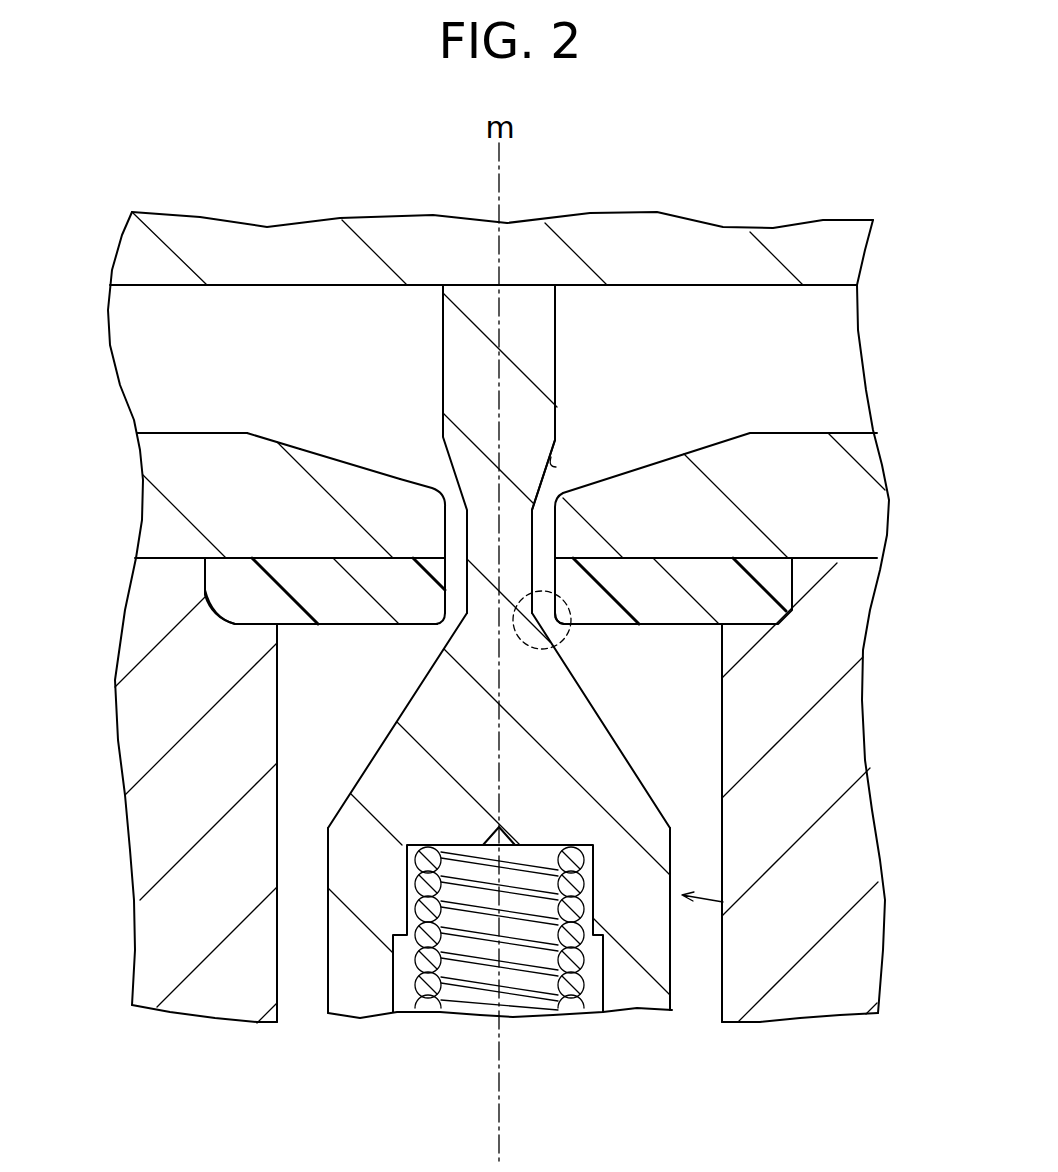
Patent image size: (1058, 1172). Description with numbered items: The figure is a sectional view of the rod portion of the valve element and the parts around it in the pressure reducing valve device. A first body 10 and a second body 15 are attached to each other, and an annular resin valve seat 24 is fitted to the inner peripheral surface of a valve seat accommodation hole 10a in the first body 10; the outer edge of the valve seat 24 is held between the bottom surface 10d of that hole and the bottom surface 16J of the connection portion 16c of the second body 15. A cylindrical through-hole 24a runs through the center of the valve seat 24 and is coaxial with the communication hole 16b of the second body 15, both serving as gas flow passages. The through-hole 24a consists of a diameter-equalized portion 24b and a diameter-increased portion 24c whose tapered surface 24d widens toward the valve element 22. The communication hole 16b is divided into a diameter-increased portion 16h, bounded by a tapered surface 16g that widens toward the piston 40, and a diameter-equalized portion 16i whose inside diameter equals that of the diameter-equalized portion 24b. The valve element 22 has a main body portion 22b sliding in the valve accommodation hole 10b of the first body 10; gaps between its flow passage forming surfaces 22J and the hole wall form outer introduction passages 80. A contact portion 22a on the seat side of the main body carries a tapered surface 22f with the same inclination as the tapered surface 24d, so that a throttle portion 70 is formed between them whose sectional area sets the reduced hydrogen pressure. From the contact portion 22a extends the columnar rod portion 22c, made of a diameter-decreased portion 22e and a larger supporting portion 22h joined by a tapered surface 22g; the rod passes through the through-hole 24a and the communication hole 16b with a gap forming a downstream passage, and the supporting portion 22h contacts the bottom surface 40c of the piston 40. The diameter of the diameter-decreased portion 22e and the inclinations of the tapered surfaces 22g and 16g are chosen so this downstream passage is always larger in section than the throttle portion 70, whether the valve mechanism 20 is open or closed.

The first body 10 is at (878, 858).
The valve seat accommodation hole 10a is at (207, 600).
The valve accommodation hole 10b is at (712, 947).
The bottom surface 10d is at (257, 633).
The second body 15 is at (146, 508).
The communication hole 16b is at (368, 454).
The connection portion 16c is at (878, 452).
The tapered surface 16g is at (277, 437).
The diameter-increased portion 16h is at (337, 460).
The diameter-equalized portion 16i is at (410, 477).
The bottom surface 16J is at (707, 556).
The valve mechanism 20 is at (723, 902).
The valve element 22 is at (340, 932).
The contact portion 22a is at (580, 732).
The main body portion 22b is at (340, 975).
The rod portion 22c is at (601, 409).
The diameter-decreased portion 22e is at (518, 533).
The tapered surface 22f is at (637, 772).
The tapered surface 22g is at (550, 458).
The supporting portion 22h is at (557, 333).
The flow passage forming surfaces 22J is at (675, 982).
The valve seat 24 is at (777, 580).
The through-hole 24a is at (426, 598).
The diameter-equalized portion 24b is at (447, 577).
The diameter-increased portion 24c is at (443, 633).
The tapered surface 24d is at (559, 627).
The piston 40 is at (845, 287).
The bottom surface 40c is at (726, 285).
The throttle portion 70 is at (528, 650).
The outer introduction passage 80 is at (277, 857).